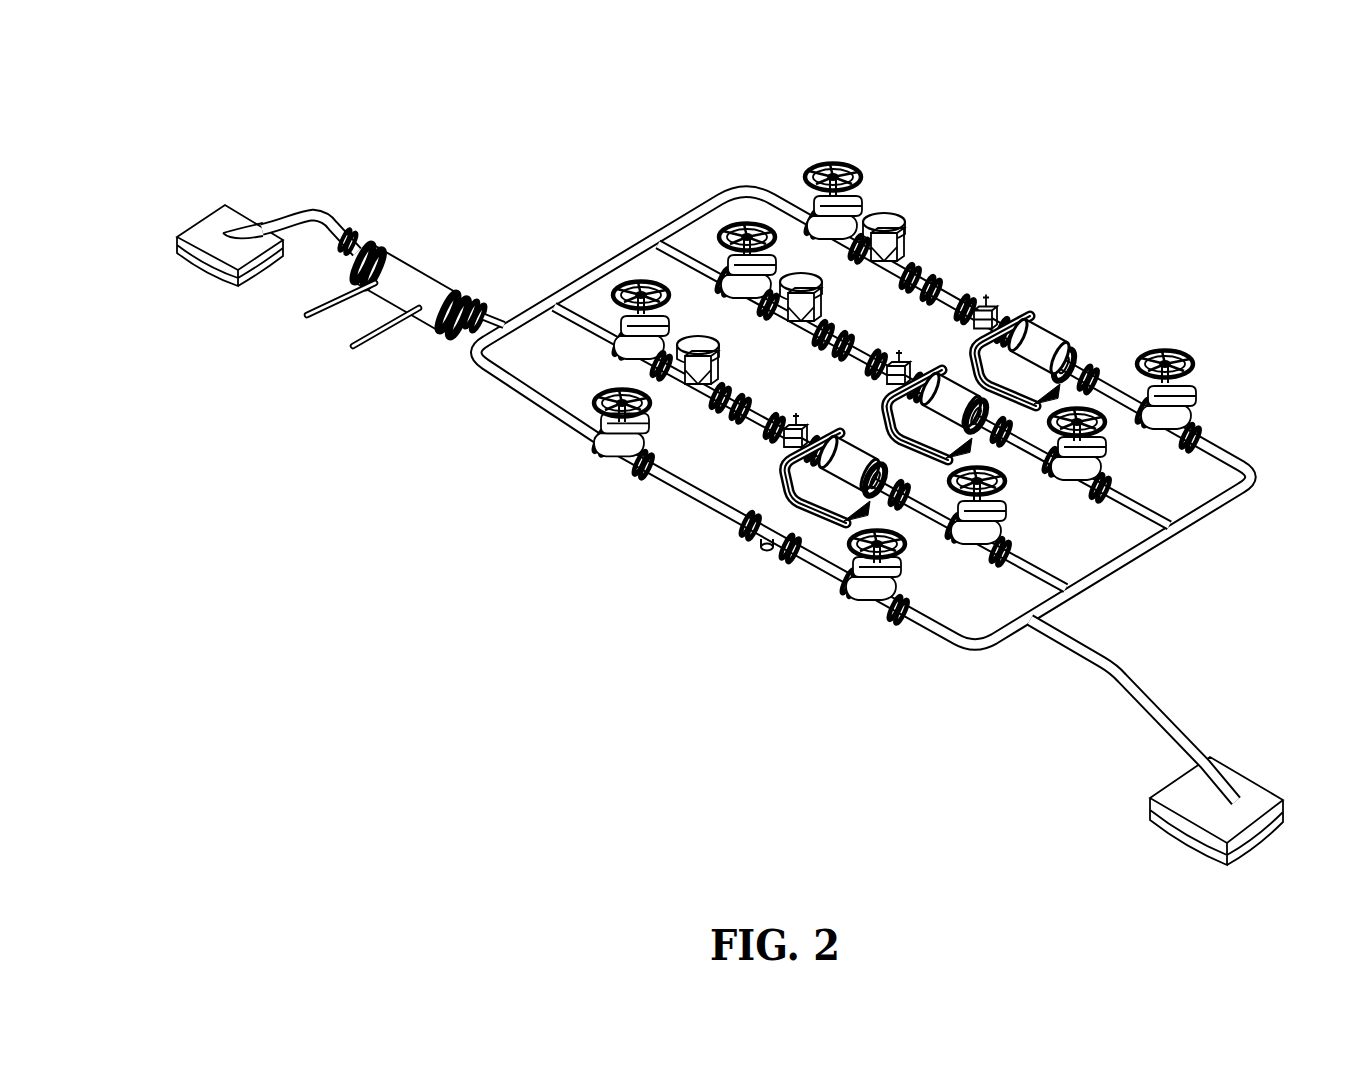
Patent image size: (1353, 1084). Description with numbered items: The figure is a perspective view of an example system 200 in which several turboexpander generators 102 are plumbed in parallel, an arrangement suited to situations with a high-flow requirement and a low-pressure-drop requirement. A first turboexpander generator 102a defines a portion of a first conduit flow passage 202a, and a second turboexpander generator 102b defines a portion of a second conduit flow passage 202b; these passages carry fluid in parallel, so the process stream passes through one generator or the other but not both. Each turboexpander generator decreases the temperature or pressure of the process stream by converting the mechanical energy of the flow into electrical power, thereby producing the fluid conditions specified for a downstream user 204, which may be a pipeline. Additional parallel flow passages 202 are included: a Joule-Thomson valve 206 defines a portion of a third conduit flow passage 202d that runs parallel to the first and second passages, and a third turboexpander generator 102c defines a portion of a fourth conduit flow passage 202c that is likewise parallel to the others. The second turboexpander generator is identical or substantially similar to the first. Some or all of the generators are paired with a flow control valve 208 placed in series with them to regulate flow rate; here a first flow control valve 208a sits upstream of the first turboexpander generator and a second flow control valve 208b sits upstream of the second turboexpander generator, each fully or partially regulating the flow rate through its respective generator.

The system 200 is at (178, 135).
The parallel flow passages 202 is at (1028, 165).
The first conduit flow passage 202a is at (860, 244).
The second conduit flow passage 202b is at (862, 458).
The fourth conduit flow passage 202c is at (757, 412).
The third conduit flow passage 202d is at (807, 558).
The downstream user 204 is at (1247, 792).
The Joule-Thomson valve 206 is at (767, 528).
The flow control valve 208 is at (665, 93).
The first flow control valve 208a is at (878, 218).
The second flow control valve 208b is at (800, 268).
The turboexpander generator 102 is at (1165, 235).
The first turboexpander generator 102a is at (1053, 347).
The second turboexpander generator 102b is at (1025, 357).
The third turboexpander generator 102c is at (953, 400).